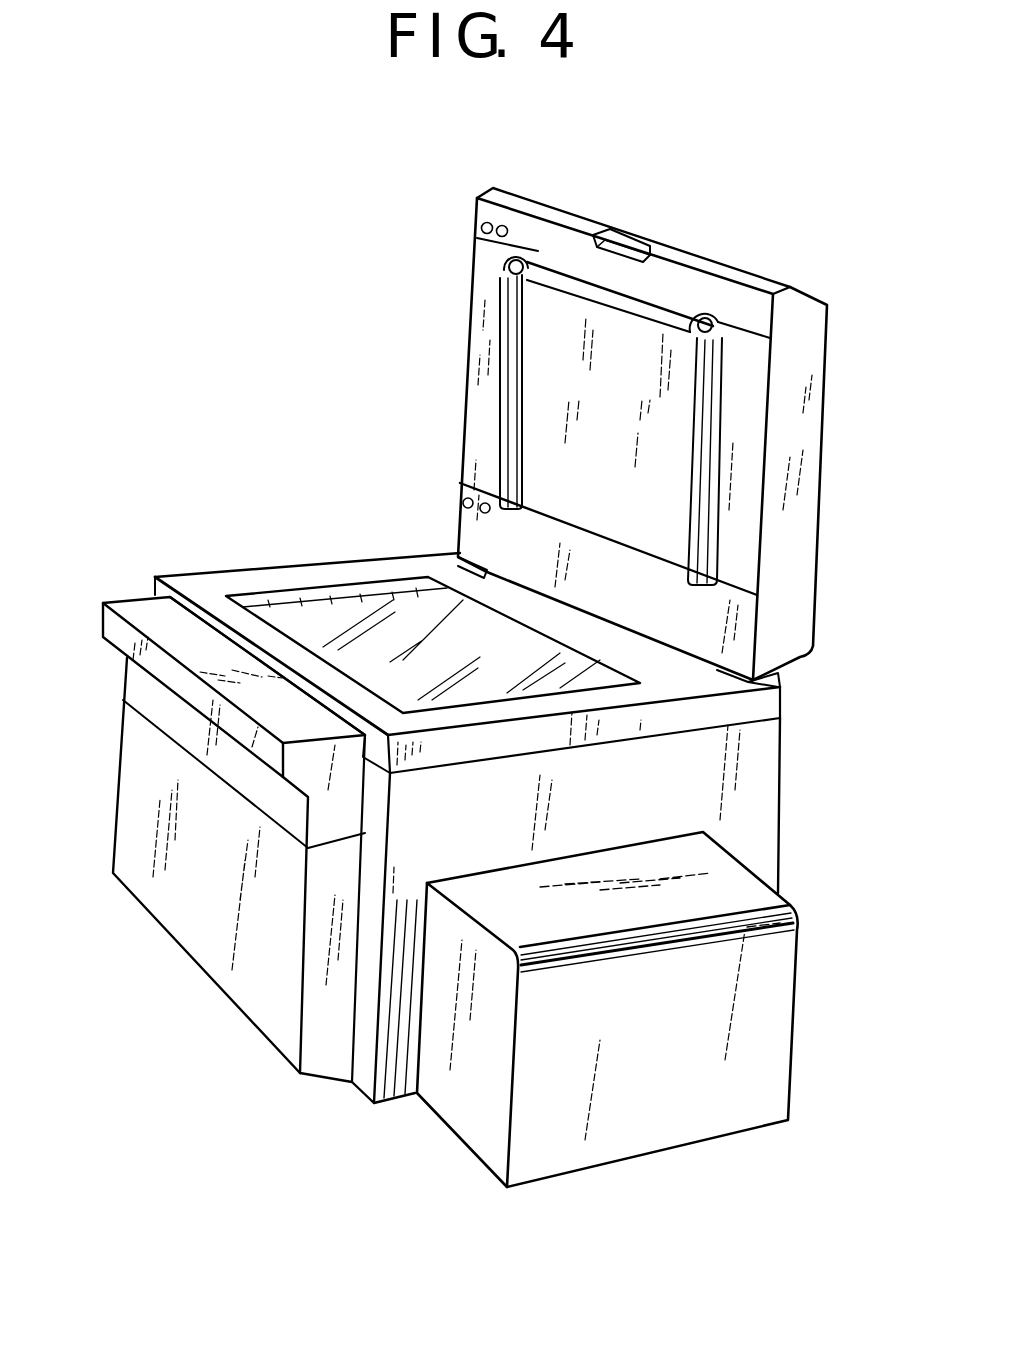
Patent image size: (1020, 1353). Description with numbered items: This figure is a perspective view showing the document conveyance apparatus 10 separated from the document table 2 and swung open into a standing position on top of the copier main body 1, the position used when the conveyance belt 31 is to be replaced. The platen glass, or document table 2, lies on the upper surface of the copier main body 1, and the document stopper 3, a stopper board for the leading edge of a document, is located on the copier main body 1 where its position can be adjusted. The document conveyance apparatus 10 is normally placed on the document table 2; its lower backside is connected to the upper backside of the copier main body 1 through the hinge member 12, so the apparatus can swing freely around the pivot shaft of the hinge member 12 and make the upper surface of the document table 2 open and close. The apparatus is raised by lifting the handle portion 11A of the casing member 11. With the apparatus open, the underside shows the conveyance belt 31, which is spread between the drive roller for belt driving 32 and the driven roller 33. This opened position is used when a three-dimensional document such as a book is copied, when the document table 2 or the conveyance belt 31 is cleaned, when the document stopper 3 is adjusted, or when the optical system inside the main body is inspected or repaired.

The copier main body 1 is at (241, 500).
The platen glass 2 is at (342, 612).
The document stopper 3 is at (256, 581).
The document conveyance apparatus 10 is at (432, 289).
The casing member 11 is at (815, 294).
The handle portion 11A is at (618, 232).
The hinge member 12 is at (470, 577).
The conveyance belt 31 is at (535, 400).
The drive roller for belt driving 32 is at (704, 320).
The driven roller 33 is at (518, 256).